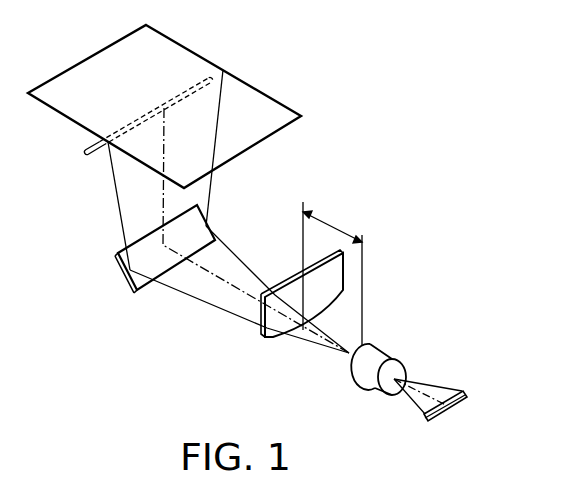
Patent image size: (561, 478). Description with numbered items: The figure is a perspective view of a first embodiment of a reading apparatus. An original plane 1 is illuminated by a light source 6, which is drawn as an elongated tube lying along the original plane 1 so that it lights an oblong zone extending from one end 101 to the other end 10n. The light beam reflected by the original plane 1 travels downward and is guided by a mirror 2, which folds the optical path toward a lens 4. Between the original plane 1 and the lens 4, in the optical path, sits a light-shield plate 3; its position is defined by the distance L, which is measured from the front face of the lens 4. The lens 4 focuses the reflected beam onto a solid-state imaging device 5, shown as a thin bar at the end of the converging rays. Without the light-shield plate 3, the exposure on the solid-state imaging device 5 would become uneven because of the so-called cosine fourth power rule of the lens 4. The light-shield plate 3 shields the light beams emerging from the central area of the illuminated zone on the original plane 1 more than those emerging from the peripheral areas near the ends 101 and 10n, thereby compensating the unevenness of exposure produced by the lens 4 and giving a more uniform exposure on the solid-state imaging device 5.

The original plane 1 is at (68, 78).
The light source 6 is at (85, 149).
The end of illuminated zone 101 is at (223, 70).
The other end of illuminated zone 10n is at (108, 146).
The mirror 2 is at (132, 284).
The light-shield plate 3 is at (276, 338).
The lens 4 is at (366, 382).
The solid-state imaging device 5 is at (455, 406).
The distance L is at (332, 273).